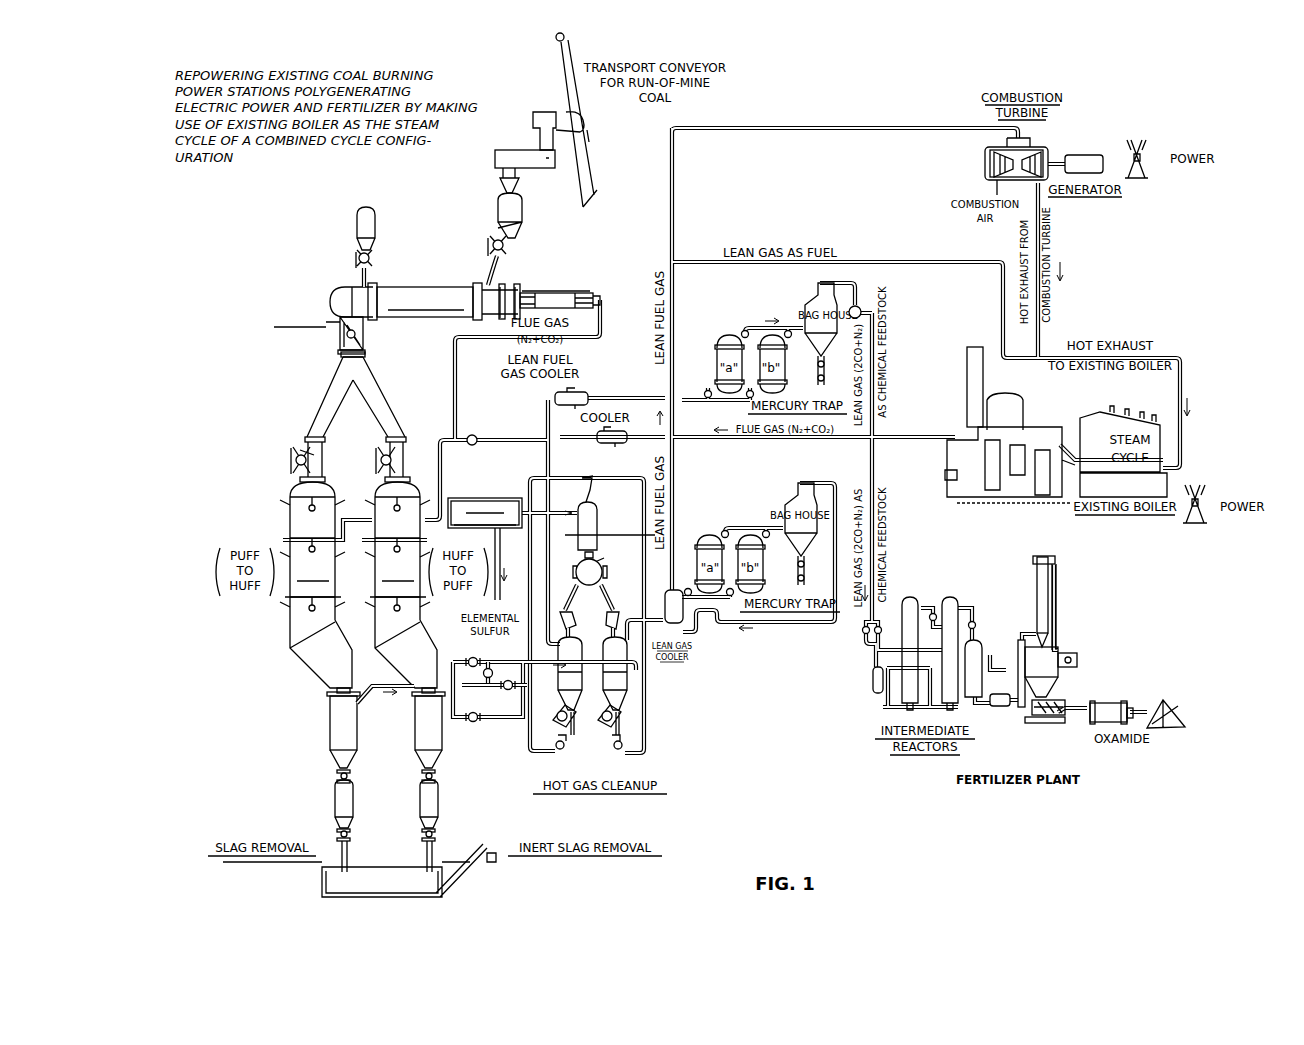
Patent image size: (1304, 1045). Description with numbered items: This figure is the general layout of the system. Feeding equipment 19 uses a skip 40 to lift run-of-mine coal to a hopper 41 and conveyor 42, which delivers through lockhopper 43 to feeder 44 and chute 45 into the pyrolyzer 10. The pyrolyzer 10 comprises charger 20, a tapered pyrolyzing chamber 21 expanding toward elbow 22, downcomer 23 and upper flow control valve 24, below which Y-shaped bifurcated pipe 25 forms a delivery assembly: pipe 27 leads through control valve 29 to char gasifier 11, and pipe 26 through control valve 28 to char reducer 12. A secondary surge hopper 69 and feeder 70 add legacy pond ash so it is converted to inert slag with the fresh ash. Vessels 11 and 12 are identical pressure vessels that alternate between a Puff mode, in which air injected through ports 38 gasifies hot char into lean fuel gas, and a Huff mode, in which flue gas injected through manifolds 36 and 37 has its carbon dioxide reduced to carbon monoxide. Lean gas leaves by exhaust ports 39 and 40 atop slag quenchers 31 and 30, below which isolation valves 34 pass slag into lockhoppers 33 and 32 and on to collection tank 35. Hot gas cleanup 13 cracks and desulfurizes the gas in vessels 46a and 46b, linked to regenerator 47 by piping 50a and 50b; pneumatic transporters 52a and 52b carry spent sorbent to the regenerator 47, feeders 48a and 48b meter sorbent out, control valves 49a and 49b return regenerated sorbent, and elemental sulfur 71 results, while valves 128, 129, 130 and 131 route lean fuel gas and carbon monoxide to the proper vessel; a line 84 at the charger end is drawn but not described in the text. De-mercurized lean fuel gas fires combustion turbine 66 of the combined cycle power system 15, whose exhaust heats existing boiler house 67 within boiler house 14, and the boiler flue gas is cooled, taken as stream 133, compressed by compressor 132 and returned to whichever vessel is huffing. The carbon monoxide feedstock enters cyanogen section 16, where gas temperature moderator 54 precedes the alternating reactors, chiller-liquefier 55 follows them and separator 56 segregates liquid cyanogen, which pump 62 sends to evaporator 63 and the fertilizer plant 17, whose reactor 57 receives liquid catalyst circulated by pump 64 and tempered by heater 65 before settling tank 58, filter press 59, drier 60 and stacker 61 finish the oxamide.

The pyrolyzer 10 is at (411, 272).
The char gasifier (reducer) 11 is at (302, 527).
The char reducer (gasifier) 12 is at (387, 527).
The hot gas cleanup 13 is at (579, 816).
The existing boiler house 14 is at (1126, 540).
The combined cycle electric power generation system 15 is at (1084, 296).
The alternating reducing reactors 16 is at (907, 789).
The fertilizer (oxamide) plant 17 is at (1089, 621).
The coal feeding equipment 19 is at (609, 146).
The charger 20 is at (573, 280).
The pyrolyzing chamber 21 is at (428, 318).
The elbow 22 is at (330, 292).
The downcomer 23 is at (364, 422).
The upper flow control valve 24 is at (340, 343).
The Y-shaped bifurcated pipe 25 is at (343, 365).
The pipe 26 is at (390, 401).
The pipe 27 is at (322, 400).
The control valve 28 is at (405, 452).
The control valve 29 is at (290, 460).
The slag quencher 30 is at (442, 745).
The slag quencher 31 is at (330, 727).
The lockhopper 32 is at (438, 800).
The lockhopper 33 is at (335, 805).
The isolation valves 34 is at (336, 776).
The collection tank 35 is at (322, 880).
The special manifold 36 is at (370, 545).
The special manifold 37 is at (283, 540).
The injection ports 38 is at (355, 485).
The exhaust port 39 is at (357, 703).
The skip 40 is at (555, 112).
The hopper 41 is at (540, 112).
The conveyor 42 is at (512, 150).
The lockhopper 43 is at (522, 212).
The feeder 44 is at (506, 247).
The chute 45 is at (500, 274).
The cleanup vessel 46a is at (572, 675).
The cleanup vessel 46b is at (620, 670).
The regenerator 47 is at (597, 512).
The feeder 48a is at (564, 748).
The feeder 48b is at (614, 748).
The control valve 49a is at (568, 612).
The control valve 49b is at (612, 612).
The piping system 50a is at (572, 628).
The piping system 50b is at (616, 622).
The pneumatic transporter 52a is at (528, 570).
The pneumatic transporter 52b is at (644, 552).
The gas temperature moderator 54 is at (873, 695).
The chiller-liquefier 55 is at (980, 640).
The separator 56 is at (1000, 706).
The reactor 57 is at (1037, 585).
The settling tank 58 is at (1031, 676).
The filter press 59 is at (1060, 700).
The drier 60 is at (1090, 722).
The stacker 61 is at (1162, 702).
The pump 62 is at (1025, 722).
The evaporator 63 is at (1018, 645).
The pump 64 is at (1077, 658).
The heater 65 is at (1056, 585).
The combustion turbine 66 is at (985, 158).
The existing boiler house 67 is at (1130, 410).
The secondary surge hopper 69 is at (375, 212).
The feeder 70 is at (356, 258).
The elemental sulfur 71 is at (485, 498).
The flue gas pipe 84 is at (604, 318).
The valve 128 is at (508, 690).
The valve 129 is at (490, 660).
The valve 130 is at (494, 676).
The valve 131 is at (475, 722).
The compressor 132 is at (472, 435).
The stream 133 is at (505, 440).